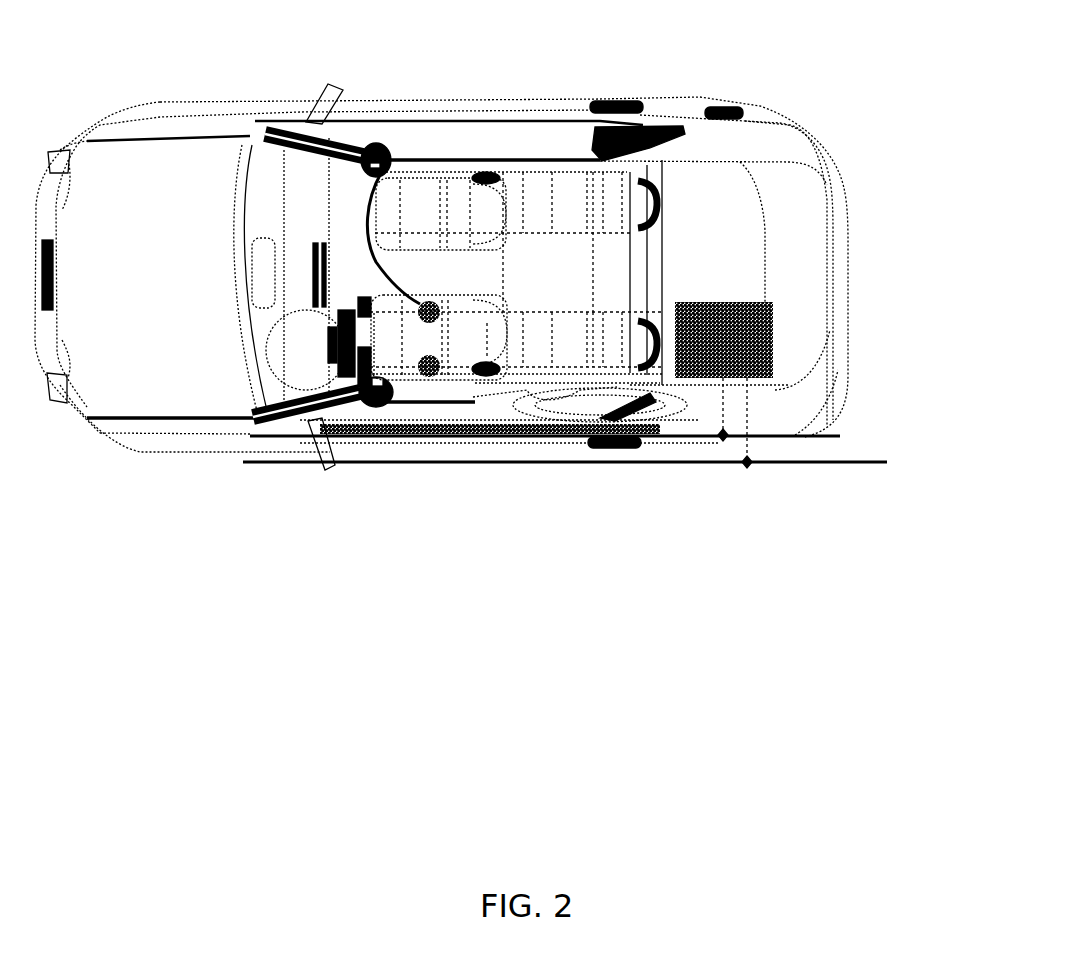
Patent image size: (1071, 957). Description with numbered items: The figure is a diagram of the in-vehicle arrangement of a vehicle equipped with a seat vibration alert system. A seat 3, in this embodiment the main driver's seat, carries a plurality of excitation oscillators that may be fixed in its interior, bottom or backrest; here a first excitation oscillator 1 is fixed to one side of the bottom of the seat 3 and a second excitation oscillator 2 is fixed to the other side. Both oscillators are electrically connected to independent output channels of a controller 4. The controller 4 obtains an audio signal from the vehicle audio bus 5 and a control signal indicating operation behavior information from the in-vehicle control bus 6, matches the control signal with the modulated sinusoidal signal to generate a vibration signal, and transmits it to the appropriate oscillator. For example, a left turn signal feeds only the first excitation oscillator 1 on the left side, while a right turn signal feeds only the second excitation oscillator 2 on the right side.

The first excitation oscillator 1 is at (415, 364).
The second excitation oscillator 2 is at (367, 247).
The seat 3 is at (421, 184).
The controller 4 is at (780, 344).
The vehicle audio bus 5 is at (822, 432).
The in-vehicle control bus 6 is at (872, 461).